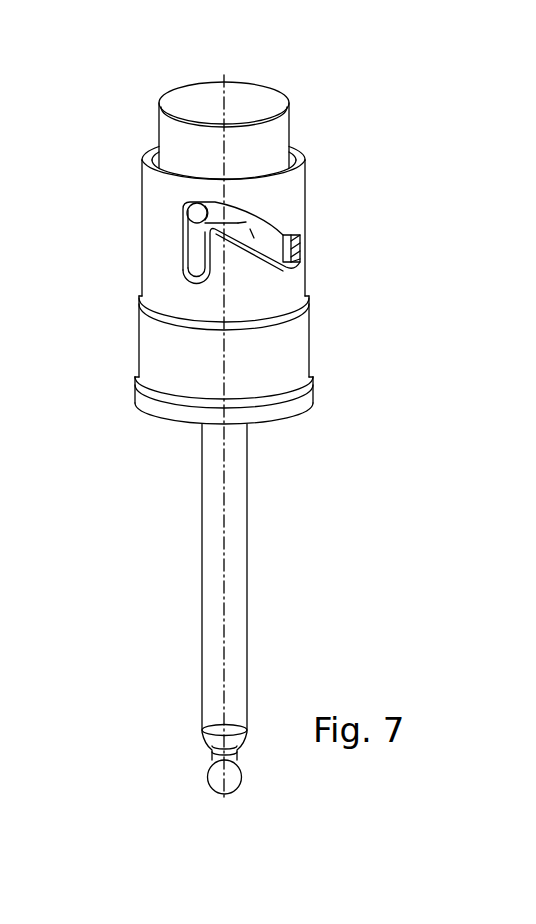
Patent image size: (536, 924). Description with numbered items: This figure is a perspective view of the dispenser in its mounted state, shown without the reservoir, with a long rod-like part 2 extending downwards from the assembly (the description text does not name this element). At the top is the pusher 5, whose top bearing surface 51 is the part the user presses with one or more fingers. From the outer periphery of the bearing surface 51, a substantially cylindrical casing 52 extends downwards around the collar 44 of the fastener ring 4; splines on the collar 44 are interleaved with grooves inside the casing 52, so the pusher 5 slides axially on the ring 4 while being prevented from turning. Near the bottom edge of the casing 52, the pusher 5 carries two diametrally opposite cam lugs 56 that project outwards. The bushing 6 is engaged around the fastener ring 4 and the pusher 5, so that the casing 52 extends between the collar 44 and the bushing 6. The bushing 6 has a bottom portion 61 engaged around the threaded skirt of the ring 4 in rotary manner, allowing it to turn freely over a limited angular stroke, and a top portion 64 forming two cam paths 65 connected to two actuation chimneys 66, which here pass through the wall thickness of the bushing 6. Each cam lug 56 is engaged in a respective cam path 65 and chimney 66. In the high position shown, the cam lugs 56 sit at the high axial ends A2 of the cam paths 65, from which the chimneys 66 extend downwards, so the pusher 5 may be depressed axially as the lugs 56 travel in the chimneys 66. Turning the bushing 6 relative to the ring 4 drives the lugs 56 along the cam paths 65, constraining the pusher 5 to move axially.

The piston rod / stem 2 is at (258, 585).
The fastener ring 4 is at (270, 247).
The pusher 5 is at (285, 91).
The bushing 6 is at (313, 319).
The collar 44 is at (250, 229).
The top bearing surface 51 is at (212, 100).
The casing 52 is at (272, 130).
The cam lugs 56 is at (187, 212).
The bottom portion 61 is at (157, 356).
The top portion 64 is at (158, 237).
The cam paths 65 is at (246, 222).
The actuation chimneys 66 is at (193, 258).
The high axial end A2 is at (178, 198).